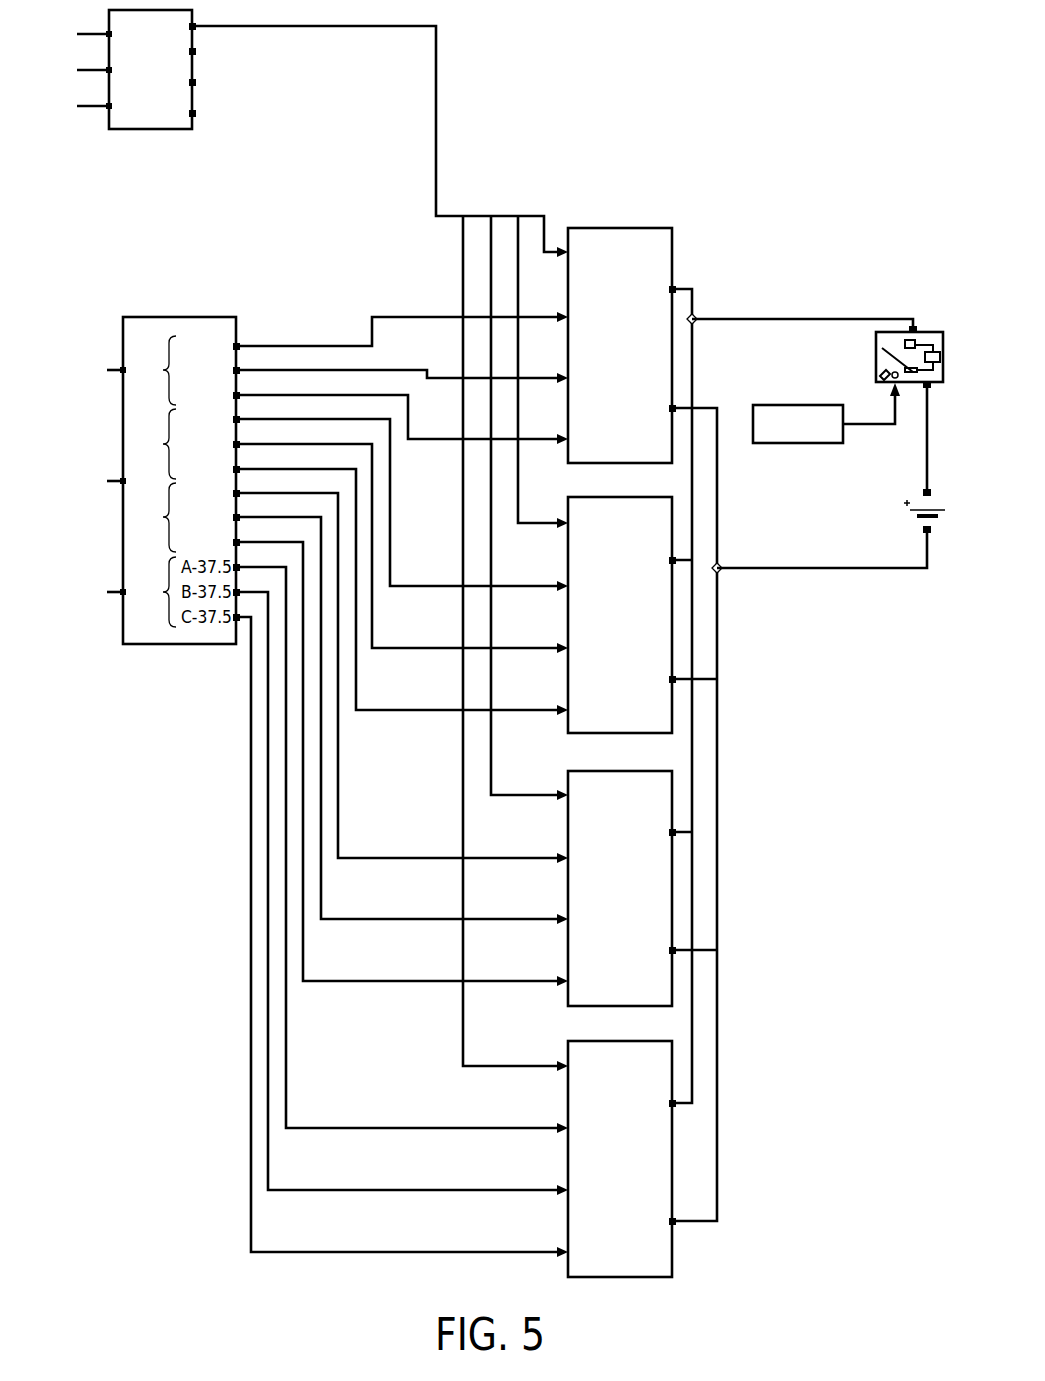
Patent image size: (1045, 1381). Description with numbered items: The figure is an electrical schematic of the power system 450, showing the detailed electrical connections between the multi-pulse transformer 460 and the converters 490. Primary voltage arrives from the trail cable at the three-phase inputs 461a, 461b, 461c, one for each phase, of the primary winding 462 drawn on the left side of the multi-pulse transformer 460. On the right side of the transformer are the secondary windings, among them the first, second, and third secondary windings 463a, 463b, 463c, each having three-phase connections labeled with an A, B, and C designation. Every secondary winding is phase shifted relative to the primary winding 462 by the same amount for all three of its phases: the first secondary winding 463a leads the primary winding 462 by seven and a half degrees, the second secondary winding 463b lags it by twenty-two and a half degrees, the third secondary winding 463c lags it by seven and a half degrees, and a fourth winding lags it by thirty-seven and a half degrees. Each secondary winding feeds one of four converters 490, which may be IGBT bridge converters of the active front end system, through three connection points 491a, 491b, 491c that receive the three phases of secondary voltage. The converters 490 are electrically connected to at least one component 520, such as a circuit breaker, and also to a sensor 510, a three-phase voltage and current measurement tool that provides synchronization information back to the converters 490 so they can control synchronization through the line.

The power system 450 is at (785, 137).
The multi-pulse transformer 460 is at (206, 296).
The three-phase input 461a is at (102, 368).
The three-phase input 461b is at (102, 479).
The three-phase input 461c is at (102, 590).
The primary winding 462 is at (103, 636).
The first secondary winding 463a is at (163, 370).
The second secondary winding 463b is at (163, 444).
The third secondary winding 463c is at (163, 517).
The converter 490 is at (633, 216).
The connection point 491a is at (565, 317).
The connection point 491b is at (565, 378).
The connection point 491c is at (565, 442).
The sensor 510 is at (225, 110).
The component 520 is at (928, 295).